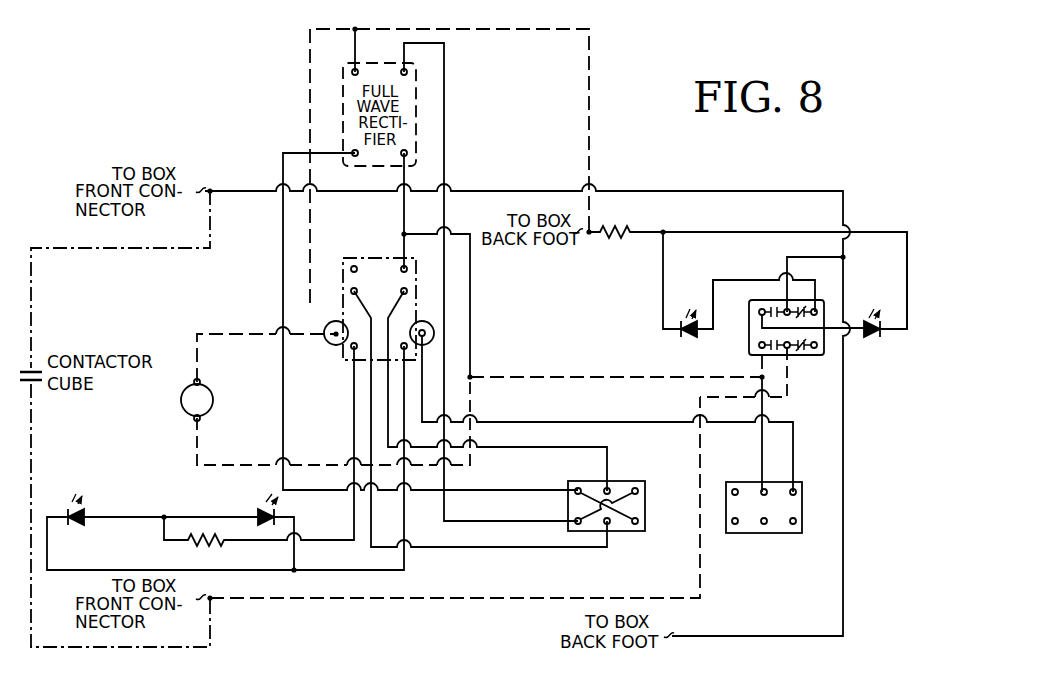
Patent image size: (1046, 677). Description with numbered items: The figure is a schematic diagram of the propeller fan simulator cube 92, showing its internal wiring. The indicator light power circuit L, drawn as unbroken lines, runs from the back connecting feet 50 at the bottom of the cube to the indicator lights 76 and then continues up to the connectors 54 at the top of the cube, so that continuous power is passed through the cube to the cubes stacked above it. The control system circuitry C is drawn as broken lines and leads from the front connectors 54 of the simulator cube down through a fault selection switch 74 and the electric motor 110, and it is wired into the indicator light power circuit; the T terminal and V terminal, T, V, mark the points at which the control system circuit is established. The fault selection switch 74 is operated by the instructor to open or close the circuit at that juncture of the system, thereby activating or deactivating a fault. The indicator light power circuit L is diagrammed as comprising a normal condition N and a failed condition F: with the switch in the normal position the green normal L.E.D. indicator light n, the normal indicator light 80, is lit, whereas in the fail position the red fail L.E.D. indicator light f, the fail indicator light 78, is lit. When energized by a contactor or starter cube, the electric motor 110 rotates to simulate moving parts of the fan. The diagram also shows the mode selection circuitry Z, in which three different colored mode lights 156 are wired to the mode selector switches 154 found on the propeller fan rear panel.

The connector 54 is at (199, 186).
The simulator cube 92 is at (280, 145).
The indicator light 76 is at (673, 312).
The fail indicator light 78 is at (697, 337).
The fault selection switch 74 is at (822, 313).
The normal indicator light 80 is at (872, 338).
The electric motor 110 is at (187, 416).
The mode light 156 is at (80, 512).
The mode selector switch 154 is at (785, 512).
The back connecting foot 50 is at (668, 629).
The control system power circuit C is at (594, 82).
The T terminal T is at (586, 243).
The indicator light power circuit L is at (883, 226).
The mode selection circuitry Z is at (340, 362).
The normal condition N is at (836, 331).
The failed condition F is at (730, 279).
The fail L.E.D. indicator light f is at (681, 333).
The normal L.E.D. indicator light n is at (886, 318).
The V terminal V is at (686, 648).